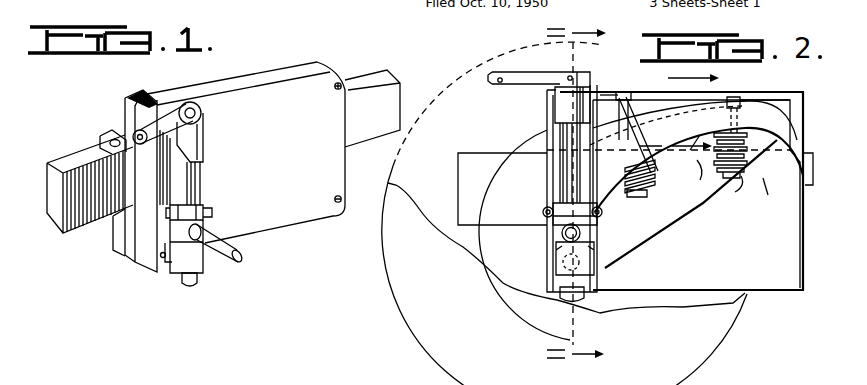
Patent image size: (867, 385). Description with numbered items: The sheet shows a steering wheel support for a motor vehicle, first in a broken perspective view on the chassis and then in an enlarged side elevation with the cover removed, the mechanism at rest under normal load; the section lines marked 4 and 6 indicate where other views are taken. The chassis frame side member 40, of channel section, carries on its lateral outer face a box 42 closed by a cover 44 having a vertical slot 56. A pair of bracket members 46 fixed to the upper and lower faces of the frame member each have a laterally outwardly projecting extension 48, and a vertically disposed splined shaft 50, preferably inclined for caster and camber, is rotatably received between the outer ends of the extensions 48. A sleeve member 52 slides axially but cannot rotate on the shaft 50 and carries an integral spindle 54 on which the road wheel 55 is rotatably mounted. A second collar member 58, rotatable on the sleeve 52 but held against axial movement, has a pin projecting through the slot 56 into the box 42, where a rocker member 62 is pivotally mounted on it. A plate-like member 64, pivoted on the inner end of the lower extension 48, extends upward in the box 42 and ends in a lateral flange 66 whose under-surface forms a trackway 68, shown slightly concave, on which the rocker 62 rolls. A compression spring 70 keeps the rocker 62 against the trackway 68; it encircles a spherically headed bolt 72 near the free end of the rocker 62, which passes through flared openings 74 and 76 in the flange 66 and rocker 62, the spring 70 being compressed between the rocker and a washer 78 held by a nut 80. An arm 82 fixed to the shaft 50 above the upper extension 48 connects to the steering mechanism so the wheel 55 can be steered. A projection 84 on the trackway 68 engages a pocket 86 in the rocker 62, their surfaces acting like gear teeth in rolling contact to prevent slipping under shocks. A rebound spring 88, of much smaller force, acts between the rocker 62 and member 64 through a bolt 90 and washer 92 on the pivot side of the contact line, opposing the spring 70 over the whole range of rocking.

In FIG. 1, the chassis frame side member 40 is at (369, 80).
In FIG. 2, the chassis frame side member 40 is at (458, 153).
In FIG. 1, the box 42 is at (275, 73).
In FIG. 2, the box 42 is at (770, 280).
In FIG. 1, the cover 44 is at (313, 142).
In FIG. 1, the bracket members 46 is at (125, 98).
In FIG. 2, the bracket members 46 is at (543, 138).
In FIG. 1, the extension 48 is at (205, 140).
In FIG. 2, the extension 48 is at (555, 100).
In FIG. 1, the splined shaft 50 is at (204, 171).
In FIG. 2, the splined shaft 50 is at (560, 156).
In FIG. 1, the sleeve member 52 is at (174, 262).
In FIG. 2, the sleeve member 52 is at (552, 263).
In FIG. 1, the spindle 54 is at (219, 241).
In FIG. 2, the wheel 55 is at (403, 299).
In FIG. 1, the vertical slot 56 is at (176, 175).
In FIG. 1, the second collar member 58 is at (208, 211).
In FIG. 2, the second collar member 58 is at (558, 206).
In FIG. 2, the rocker member 62 is at (699, 170).
In FIG. 2, the plate-like member 64 is at (685, 178).
In FIG. 2, the lateral flange 66 is at (628, 103).
In FIG. 2, the trackway 68 is at (690, 80).
In FIG. 2, the compression spring 70 is at (773, 197).
In FIG. 2, the spherically headed bolt 72 is at (737, 97).
In FIG. 2, the opening 74 is at (776, 83).
In FIG. 2, the opening 76 is at (693, 123).
In FIG. 2, the washer 78 is at (691, 204).
In FIG. 2, the nut 80 is at (732, 195).
In FIG. 1, the arm 82 is at (164, 124).
In FIG. 2, the arm 82 is at (493, 72).
In FIG. 2, the projection 84 is at (641, 135).
In FIG. 2, the pocket 86 is at (681, 155).
In FIG. 2, the rebound spring 88 is at (587, 212).
In FIG. 2, the bolt 90 is at (612, 92).
In FIG. 2, the washer 92 is at (640, 190).
In FIG. 2, the section line 4- 4 is at (585, 194).
In FIG. 2, the section line 6- 6 is at (686, 120).